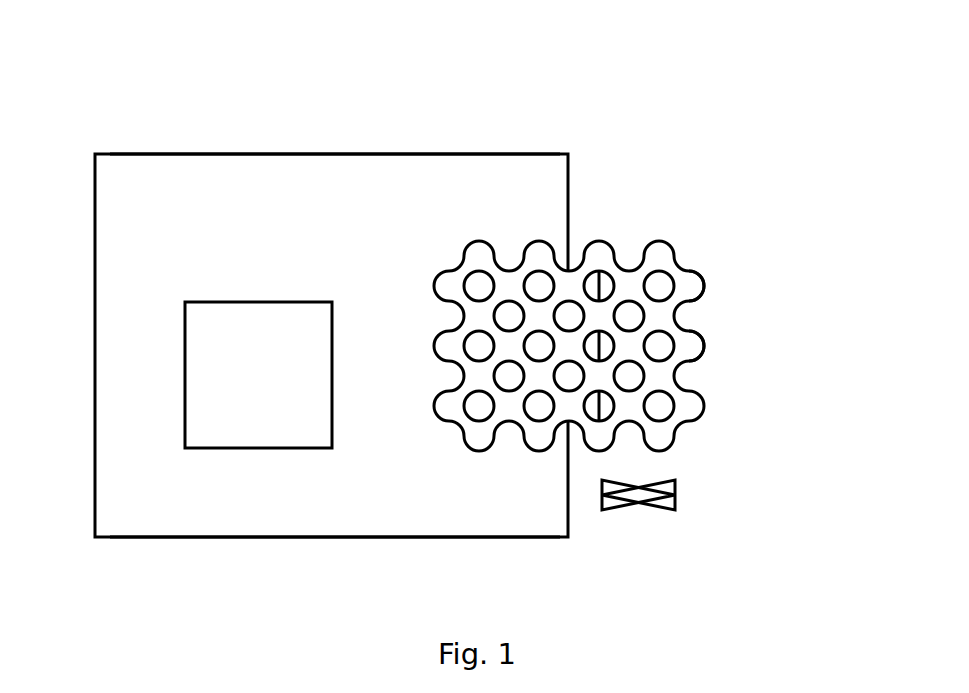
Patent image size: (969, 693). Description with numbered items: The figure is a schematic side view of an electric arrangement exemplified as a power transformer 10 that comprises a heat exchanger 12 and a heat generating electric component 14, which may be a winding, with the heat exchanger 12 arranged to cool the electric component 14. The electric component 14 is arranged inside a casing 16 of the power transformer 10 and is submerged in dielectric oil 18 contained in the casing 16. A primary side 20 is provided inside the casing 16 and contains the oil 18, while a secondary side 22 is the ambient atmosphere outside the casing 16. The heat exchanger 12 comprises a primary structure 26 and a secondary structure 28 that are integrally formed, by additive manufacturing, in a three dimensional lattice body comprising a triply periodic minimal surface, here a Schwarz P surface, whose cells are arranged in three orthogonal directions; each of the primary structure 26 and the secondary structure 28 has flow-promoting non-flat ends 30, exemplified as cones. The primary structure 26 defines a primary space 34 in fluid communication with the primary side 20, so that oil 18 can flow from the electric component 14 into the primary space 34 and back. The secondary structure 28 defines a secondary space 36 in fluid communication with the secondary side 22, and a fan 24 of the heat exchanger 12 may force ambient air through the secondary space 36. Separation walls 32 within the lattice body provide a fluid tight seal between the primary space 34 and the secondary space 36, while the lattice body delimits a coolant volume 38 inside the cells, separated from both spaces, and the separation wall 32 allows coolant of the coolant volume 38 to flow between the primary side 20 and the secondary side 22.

The power transformer 10 is at (222, 86).
The heat exchanger 12 is at (674, 184).
The electric component 14 is at (272, 390).
The casing 16 is at (96, 205).
The dielectric oil 18 is at (393, 520).
The primary side 20 is at (540, 196).
The secondary side 22 is at (923, 311).
The fan 24 is at (663, 493).
The primary structure 26 is at (433, 285).
The secondary structure 28 is at (703, 287).
The flow-promoting non-flat ends 30 is at (705, 344).
The separation wall 32 is at (590, 400).
The primary space 34 is at (479, 285).
The secondary space 36 is at (657, 285).
The coolant volume 38 is at (456, 347).